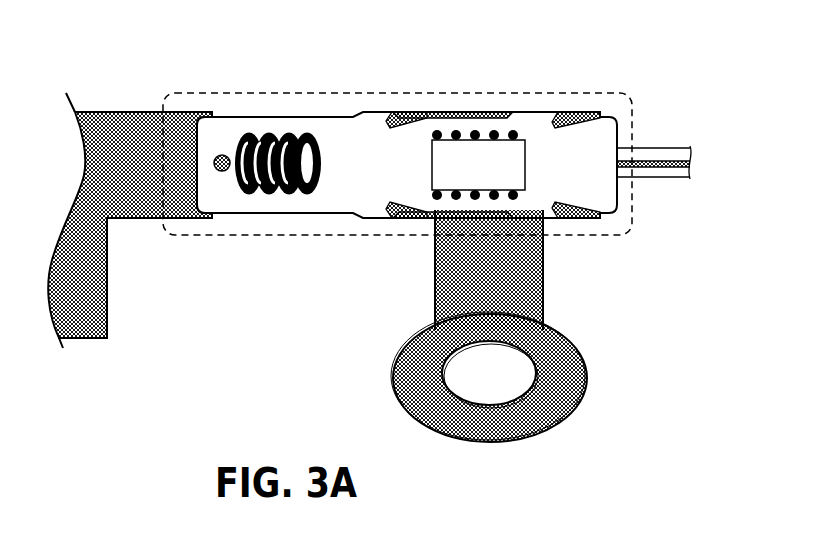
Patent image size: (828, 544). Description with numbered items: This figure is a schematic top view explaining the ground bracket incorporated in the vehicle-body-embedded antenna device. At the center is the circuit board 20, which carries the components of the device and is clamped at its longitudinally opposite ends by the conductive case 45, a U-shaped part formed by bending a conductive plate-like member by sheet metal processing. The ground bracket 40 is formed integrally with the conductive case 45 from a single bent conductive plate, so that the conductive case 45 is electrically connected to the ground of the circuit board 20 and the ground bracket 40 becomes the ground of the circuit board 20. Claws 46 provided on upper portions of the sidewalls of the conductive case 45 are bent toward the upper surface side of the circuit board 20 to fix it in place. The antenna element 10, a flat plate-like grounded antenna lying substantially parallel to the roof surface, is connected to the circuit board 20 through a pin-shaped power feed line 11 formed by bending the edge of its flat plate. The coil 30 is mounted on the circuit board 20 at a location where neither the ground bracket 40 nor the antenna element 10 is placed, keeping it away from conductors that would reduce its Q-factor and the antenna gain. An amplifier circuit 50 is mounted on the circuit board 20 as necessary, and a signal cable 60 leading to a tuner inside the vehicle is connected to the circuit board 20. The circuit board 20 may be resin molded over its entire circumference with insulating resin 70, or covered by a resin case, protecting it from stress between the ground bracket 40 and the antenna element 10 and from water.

The antenna element 10 is at (145, 208).
The power feed line 11 is at (221, 171).
The circuit board 20 is at (370, 207).
The coil 30 is at (278, 194).
The ground bracket 40 is at (537, 262).
The conductive case 45 is at (490, 113).
The claws 46 is at (383, 113).
The amplifier circuit 50 is at (448, 146).
The signal cable 60 is at (677, 149).
The insulating resin 70 is at (230, 93).